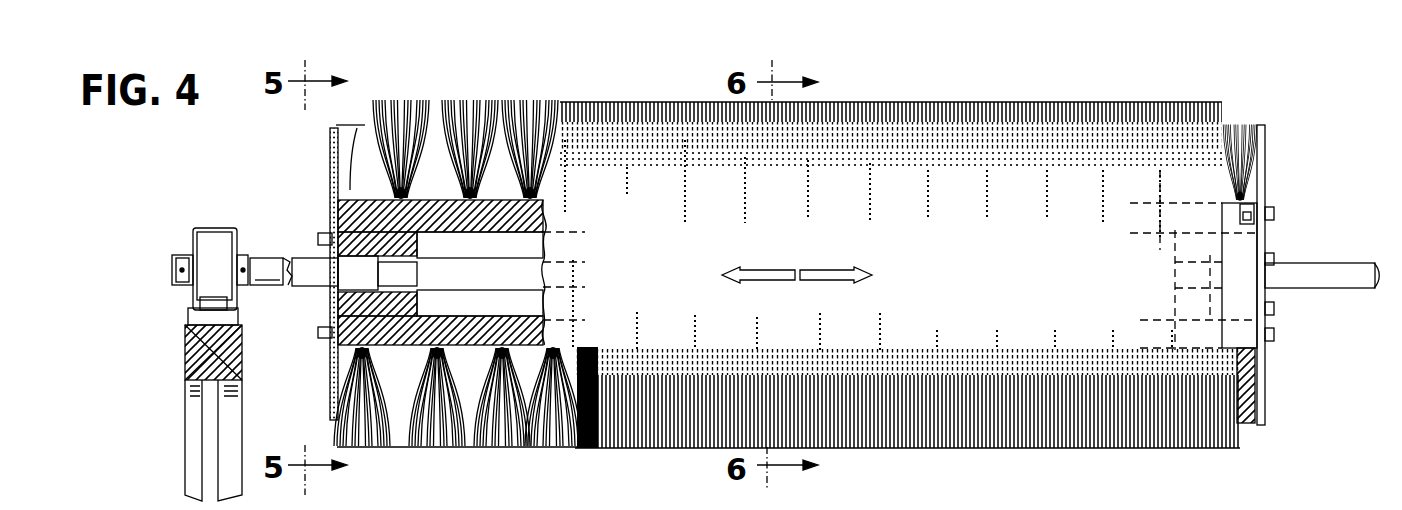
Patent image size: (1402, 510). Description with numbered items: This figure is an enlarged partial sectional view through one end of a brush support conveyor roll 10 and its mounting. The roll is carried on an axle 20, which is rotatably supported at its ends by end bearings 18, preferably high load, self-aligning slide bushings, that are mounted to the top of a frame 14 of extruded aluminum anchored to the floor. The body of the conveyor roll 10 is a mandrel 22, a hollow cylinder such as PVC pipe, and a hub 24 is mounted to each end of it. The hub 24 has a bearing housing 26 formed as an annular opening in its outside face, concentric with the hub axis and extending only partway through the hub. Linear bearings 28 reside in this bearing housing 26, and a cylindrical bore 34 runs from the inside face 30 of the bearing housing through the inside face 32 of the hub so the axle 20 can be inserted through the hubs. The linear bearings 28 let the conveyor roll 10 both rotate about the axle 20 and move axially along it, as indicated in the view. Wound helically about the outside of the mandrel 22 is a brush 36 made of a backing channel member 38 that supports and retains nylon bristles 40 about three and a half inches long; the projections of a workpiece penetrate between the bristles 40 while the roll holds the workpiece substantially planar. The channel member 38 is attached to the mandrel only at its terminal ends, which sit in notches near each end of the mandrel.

The conveyor roll 10 is at (608, 107).
The frame 14 is at (190, 417).
The end bearing 18 is at (193, 230).
The axle 20 is at (1337, 268).
The mandrel 22 is at (562, 250).
The hub 24 is at (420, 303).
The bearing housing 26 is at (349, 143).
The linear bearing 28 is at (340, 287).
The inside face of the bearing housing 30 is at (326, 310).
The inside face of hub 32 is at (322, 390).
The cylindrical bore 34 is at (425, 258).
The brush 36 is at (935, 82).
The backing channel member 38 is at (577, 345).
The bristles 40 is at (907, 428).